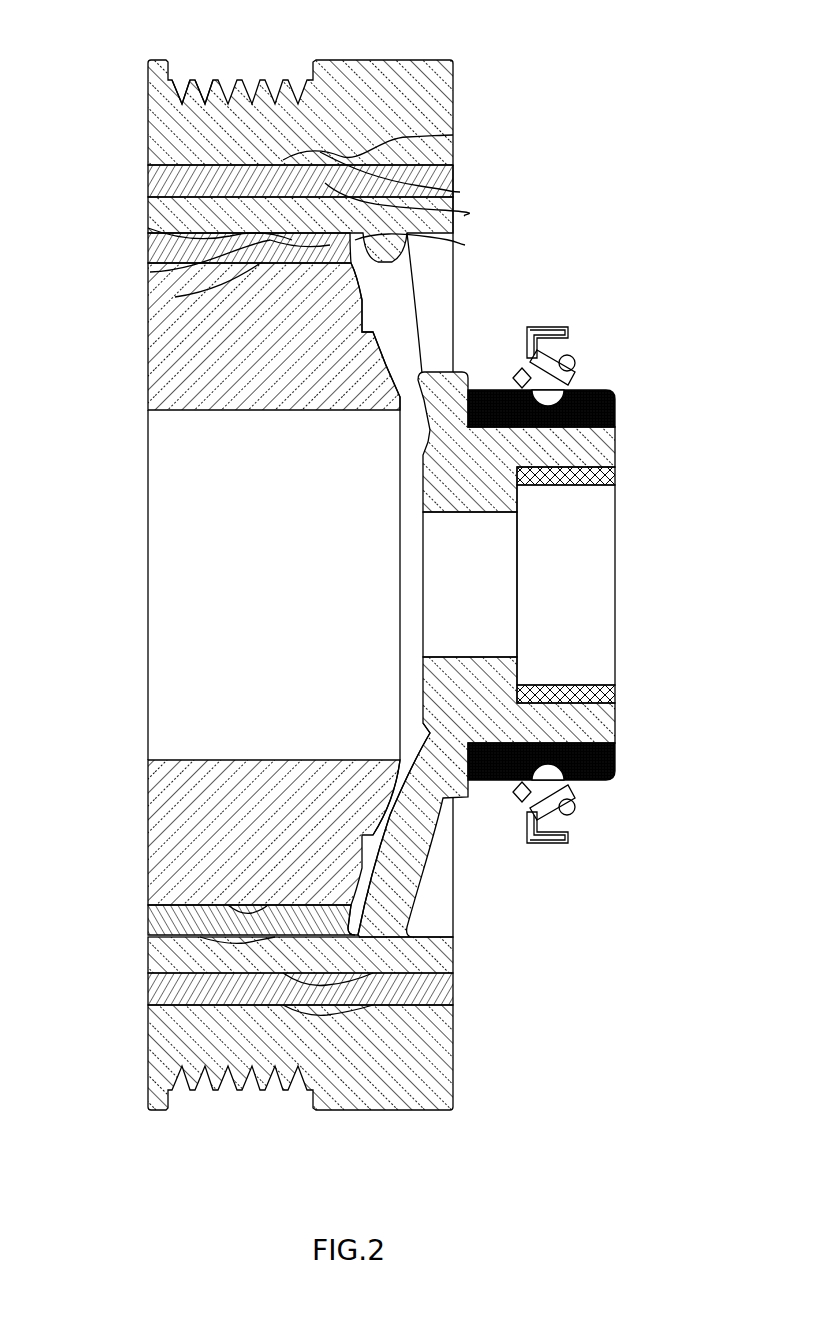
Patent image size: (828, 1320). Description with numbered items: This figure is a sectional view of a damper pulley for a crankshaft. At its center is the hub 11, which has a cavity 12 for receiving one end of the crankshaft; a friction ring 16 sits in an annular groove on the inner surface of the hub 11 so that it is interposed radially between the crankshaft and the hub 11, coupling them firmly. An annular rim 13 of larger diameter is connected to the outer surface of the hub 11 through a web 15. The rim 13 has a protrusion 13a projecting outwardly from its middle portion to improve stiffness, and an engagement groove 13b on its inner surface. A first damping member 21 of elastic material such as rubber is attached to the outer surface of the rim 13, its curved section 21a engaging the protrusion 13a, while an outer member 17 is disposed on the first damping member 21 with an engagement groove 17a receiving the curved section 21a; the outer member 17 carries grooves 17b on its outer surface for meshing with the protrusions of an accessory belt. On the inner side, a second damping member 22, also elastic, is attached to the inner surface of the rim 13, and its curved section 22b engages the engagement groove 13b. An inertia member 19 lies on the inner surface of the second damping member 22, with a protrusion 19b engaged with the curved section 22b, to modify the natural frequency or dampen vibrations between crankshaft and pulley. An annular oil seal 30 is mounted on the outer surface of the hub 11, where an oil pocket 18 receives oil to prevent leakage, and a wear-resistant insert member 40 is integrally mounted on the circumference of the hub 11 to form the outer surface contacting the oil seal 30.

The hub 11 is at (605, 443).
The cavity 12 is at (583, 593).
The rim 13 is at (160, 214).
The protrusion 13a is at (465, 216).
The engagement groove 13b is at (465, 245).
The web 15 is at (456, 380).
The friction ring 16 is at (608, 475).
The outer member 17 is at (160, 122).
The engagement groove 17a is at (453, 135).
The grooves 17b is at (229, 100).
The oil pocket 18 is at (574, 374).
The inertia member 19 is at (160, 350).
The protrusion 19b is at (175, 297).
The first damping member 21 is at (160, 180).
The curved section 21a is at (460, 192).
The second damping member 22 is at (160, 243).
The curved section 22b is at (150, 272).
The oil seal 30 is at (578, 320).
The wear-resistant insert member 40 is at (612, 407).